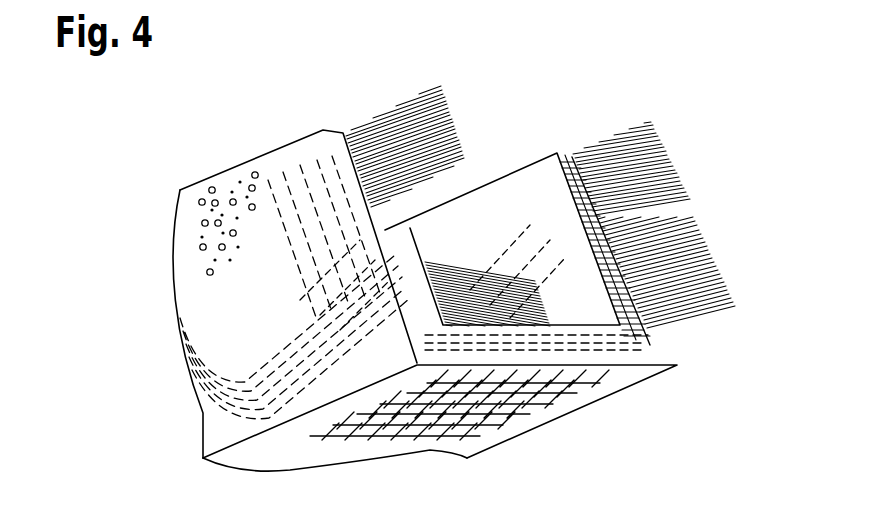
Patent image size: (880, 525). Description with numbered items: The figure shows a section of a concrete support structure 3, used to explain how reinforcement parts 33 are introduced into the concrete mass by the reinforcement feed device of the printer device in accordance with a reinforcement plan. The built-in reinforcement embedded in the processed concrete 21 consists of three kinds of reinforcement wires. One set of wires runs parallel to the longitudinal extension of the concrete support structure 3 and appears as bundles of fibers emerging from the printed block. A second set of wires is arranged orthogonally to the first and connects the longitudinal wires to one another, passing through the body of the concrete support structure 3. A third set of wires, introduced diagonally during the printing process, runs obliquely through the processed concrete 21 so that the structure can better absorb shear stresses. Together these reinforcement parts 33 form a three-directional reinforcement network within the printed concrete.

The holding body / fiber block 3 is at (236, 138).
The groove / channel body 21 is at (652, 348).
The optical fibers 33 is at (440, 100).